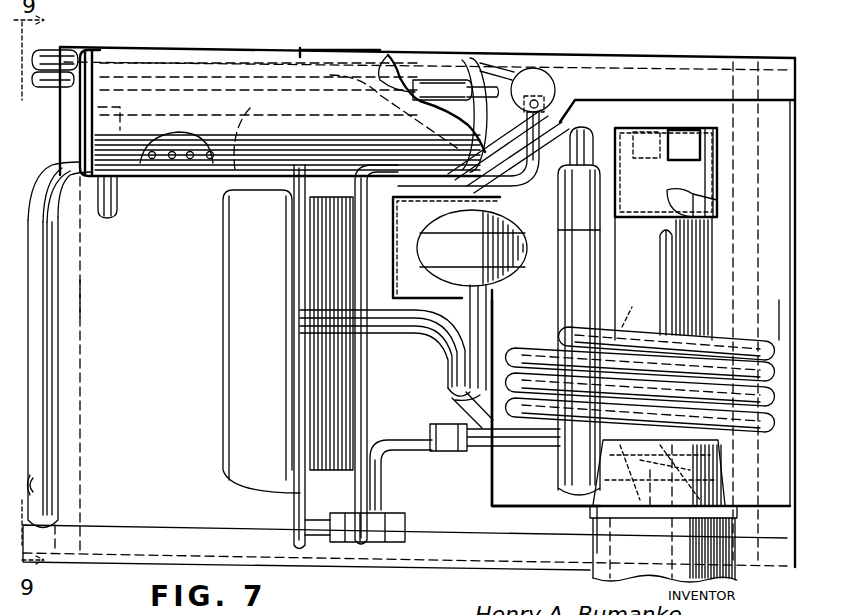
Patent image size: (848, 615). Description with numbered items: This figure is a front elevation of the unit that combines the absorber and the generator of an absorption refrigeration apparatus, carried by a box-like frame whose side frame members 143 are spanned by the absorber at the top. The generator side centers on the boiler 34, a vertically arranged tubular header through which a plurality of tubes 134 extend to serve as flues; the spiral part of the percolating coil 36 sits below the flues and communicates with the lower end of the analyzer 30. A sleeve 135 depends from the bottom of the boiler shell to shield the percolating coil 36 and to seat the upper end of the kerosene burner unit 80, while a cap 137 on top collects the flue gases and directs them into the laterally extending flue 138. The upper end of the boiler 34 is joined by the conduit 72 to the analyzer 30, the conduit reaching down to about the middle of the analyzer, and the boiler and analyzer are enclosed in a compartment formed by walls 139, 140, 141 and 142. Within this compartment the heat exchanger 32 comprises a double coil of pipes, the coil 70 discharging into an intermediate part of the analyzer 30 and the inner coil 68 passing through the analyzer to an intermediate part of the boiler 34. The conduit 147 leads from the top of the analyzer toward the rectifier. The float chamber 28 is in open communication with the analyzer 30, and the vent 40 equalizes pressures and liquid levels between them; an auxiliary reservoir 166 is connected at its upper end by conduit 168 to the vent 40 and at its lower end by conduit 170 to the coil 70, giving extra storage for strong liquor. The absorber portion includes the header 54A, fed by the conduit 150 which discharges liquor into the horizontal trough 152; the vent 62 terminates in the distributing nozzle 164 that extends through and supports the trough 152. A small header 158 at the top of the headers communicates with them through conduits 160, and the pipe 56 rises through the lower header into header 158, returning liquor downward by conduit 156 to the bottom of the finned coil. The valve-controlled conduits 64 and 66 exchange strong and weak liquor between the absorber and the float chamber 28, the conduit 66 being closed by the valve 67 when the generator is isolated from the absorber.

The float chamber 28 is at (227, 425).
The analyzer 30 is at (557, 463).
The heat exchanger 32 is at (764, 338).
The boiler 34 is at (663, 278).
The percolating coil 36 is at (665, 280).
The vent 40 is at (508, 145).
The absorber header 54A is at (281, 50).
The pipe 56 is at (43, 383).
The vent 62 is at (225, 48).
The conduit 64 is at (280, 375).
The conduit 66 is at (341, 390).
The valve 67 is at (340, 461).
The inner coil 68 is at (403, 453).
The coil 70 is at (447, 357).
The conduit 72 is at (610, 180).
The kerosene burner unit 80 is at (597, 553).
The tubes 134 is at (700, 214).
The sleeve 135 is at (630, 500).
The cap 137 is at (718, 173).
The flue 138 is at (645, 142).
The wall 139 is at (695, 100).
The wall 140 is at (493, 320).
The wall 141 is at (525, 507).
The wall 142 is at (777, 312).
The side frame members 143 is at (83, 296).
The conduit 147 is at (590, 130).
The conduit 150 is at (42, 53).
The trough 152 is at (389, 56).
The conduit 156 is at (35, 481).
The small header 158 is at (556, 88).
The conduits 160 is at (490, 63).
The distributing nozzle 164 is at (430, 57).
The auxiliary reservoir 166 is at (537, 234).
The conduit 168 is at (462, 206).
The conduit 170 is at (493, 347).